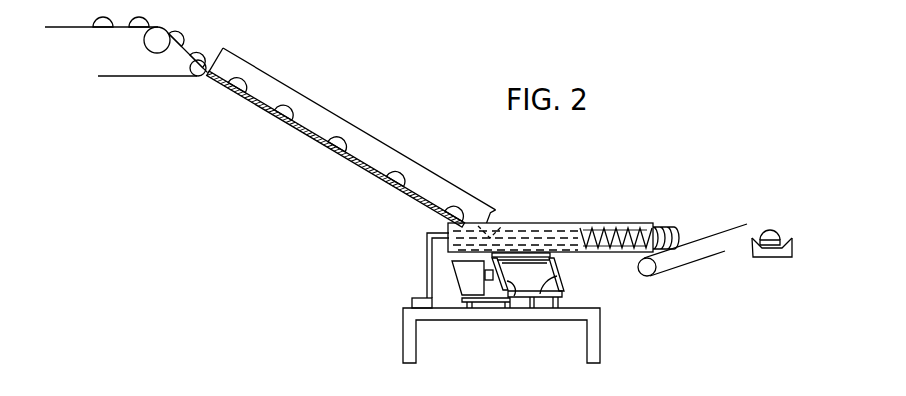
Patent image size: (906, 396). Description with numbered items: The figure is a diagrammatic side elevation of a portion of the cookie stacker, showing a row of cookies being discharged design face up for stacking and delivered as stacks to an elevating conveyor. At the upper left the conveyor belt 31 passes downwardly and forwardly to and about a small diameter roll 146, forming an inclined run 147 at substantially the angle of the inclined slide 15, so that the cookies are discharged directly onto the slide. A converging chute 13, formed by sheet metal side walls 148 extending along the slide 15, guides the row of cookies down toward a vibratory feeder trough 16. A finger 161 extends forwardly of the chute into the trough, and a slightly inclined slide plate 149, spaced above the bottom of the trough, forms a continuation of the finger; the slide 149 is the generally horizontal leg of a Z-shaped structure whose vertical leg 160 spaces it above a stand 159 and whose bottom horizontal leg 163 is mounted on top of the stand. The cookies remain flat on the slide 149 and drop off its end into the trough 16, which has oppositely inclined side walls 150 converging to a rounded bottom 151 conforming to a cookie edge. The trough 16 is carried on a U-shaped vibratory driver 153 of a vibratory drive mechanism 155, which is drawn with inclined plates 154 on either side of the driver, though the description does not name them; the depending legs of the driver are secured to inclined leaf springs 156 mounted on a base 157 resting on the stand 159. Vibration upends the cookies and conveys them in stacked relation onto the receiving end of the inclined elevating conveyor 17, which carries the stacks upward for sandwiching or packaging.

The converging chute 13 is at (351, 142).
The inclined slide 15 is at (373, 137).
The vibratory feeder trough 16 is at (632, 226).
The inclined elevating conveyor 17 is at (698, 240).
The conveyor belt 31 is at (150, 42).
The small diameter roll 146 is at (197, 73).
The inclined run 147 is at (190, 48).
The sheet metal side walls 148 is at (359, 129).
The slide plate 149 is at (567, 238).
The inclined side walls 150 is at (765, 237).
The rounded bottom 151 is at (772, 253).
The U-shaped vibratory driver 153 is at (522, 260).
The side plates 154 is at (493, 260).
The vibratory drive mechanism 155 is at (448, 273).
The inclined leaf springs 156 is at (515, 285).
The base 157 is at (547, 298).
The stand 159 is at (592, 308).
The vertical leg 160 is at (427, 280).
The finger 161 is at (488, 225).
The bottom horizontal leg 163 is at (414, 306).